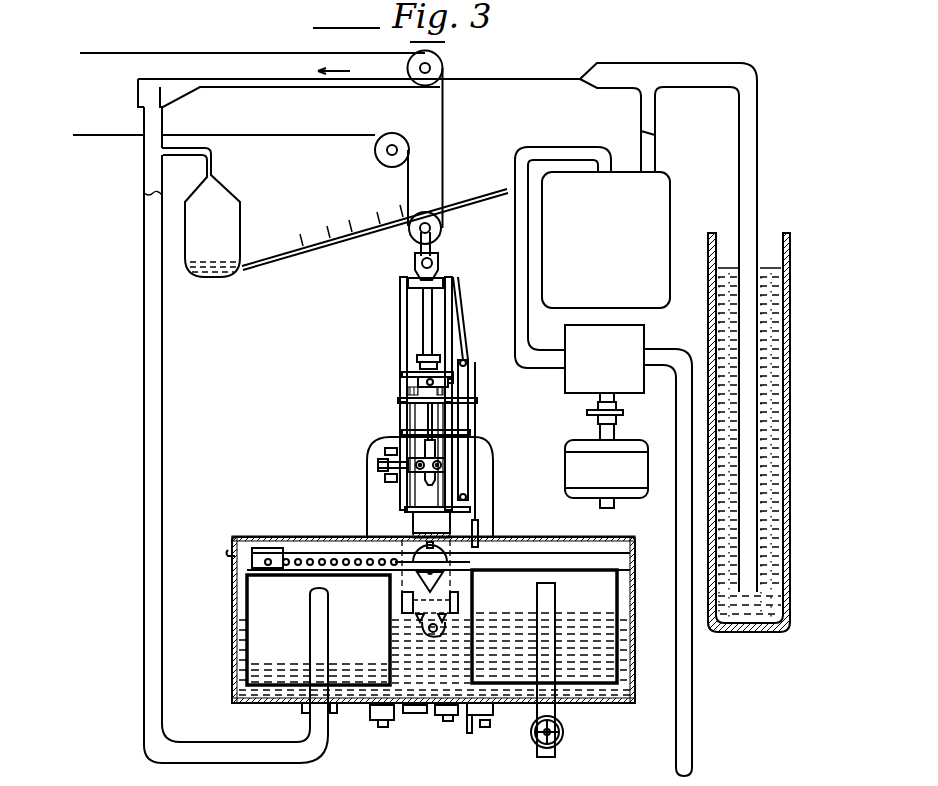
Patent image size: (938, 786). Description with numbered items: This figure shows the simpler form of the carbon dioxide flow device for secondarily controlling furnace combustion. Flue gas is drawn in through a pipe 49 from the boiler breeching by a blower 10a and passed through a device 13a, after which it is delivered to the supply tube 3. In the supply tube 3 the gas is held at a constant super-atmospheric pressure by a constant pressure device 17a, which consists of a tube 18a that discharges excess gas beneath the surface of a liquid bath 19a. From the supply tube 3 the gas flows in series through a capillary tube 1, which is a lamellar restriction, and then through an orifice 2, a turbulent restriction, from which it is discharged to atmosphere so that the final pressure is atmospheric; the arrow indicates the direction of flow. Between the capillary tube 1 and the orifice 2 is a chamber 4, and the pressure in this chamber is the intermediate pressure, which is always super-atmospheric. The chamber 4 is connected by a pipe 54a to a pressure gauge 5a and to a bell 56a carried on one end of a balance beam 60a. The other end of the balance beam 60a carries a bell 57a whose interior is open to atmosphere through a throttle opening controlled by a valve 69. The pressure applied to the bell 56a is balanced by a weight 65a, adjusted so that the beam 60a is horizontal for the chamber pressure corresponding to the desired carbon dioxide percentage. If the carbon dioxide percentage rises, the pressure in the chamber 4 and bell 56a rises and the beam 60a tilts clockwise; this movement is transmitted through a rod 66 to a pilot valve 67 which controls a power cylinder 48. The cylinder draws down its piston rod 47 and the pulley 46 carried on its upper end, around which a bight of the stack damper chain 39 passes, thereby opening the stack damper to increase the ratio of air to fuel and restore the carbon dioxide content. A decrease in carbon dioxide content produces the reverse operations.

The capillary tube 1 is at (488, 79).
The orifice 2 is at (137, 95).
The supply tube 3 is at (617, 67).
The chamber 4 is at (167, 95).
The pressure gauge 5a is at (345, 236).
The chain 39 is at (304, 136).
The pulley 46 is at (415, 230).
The piston rod 47 is at (425, 334).
The power cylinder 48 is at (422, 411).
The pipe 54a is at (158, 387).
The rod 66 is at (480, 431).
The pilot valve 67 is at (432, 473).
The weight 65a is at (284, 533).
The balance beam 60a is at (515, 537).
The bell 56a is at (318, 630).
The bell 57a is at (544, 626).
The valve 69 is at (560, 743).
The pipe 49 is at (680, 706).
The blower 10a is at (606, 416).
The device 13a is at (592, 257).
The tube 18a is at (753, 217).
The liquid bath 19a is at (768, 301).
The constant pressure device 17a is at (790, 362).